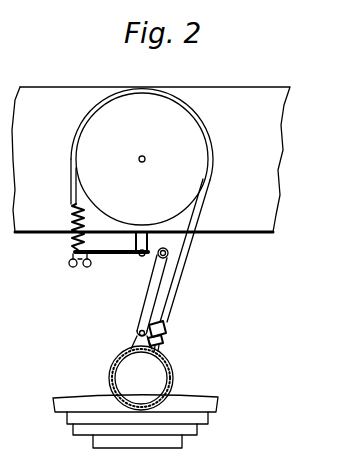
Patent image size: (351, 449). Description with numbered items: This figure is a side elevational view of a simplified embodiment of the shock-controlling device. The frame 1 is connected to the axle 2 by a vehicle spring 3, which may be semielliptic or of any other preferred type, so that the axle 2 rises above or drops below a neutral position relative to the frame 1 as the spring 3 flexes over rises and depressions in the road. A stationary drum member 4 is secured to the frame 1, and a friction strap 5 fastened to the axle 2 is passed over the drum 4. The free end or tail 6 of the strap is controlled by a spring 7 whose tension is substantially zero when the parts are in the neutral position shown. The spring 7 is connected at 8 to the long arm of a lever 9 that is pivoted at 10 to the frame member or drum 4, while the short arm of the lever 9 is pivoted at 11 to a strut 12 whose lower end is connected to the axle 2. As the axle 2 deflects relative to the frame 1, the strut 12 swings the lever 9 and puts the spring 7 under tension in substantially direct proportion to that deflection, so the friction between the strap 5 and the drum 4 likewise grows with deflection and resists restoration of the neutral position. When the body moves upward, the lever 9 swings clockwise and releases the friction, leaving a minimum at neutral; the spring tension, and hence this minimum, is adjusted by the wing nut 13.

The frame 1 is at (266, 143).
The axle 2 is at (158, 377).
The vehicle spring 3 is at (218, 398).
The stationary drum member 4 is at (176, 127).
The friction strap 5 is at (184, 267).
The free end or tail 6 is at (75, 198).
The spring 7 is at (72, 233).
The connection 8 is at (71, 266).
The lever 9 is at (111, 256).
The pivot 10 is at (142, 257).
The pivot 11 is at (168, 252).
The strut 12 is at (143, 313).
The wing nut 13 is at (82, 260).